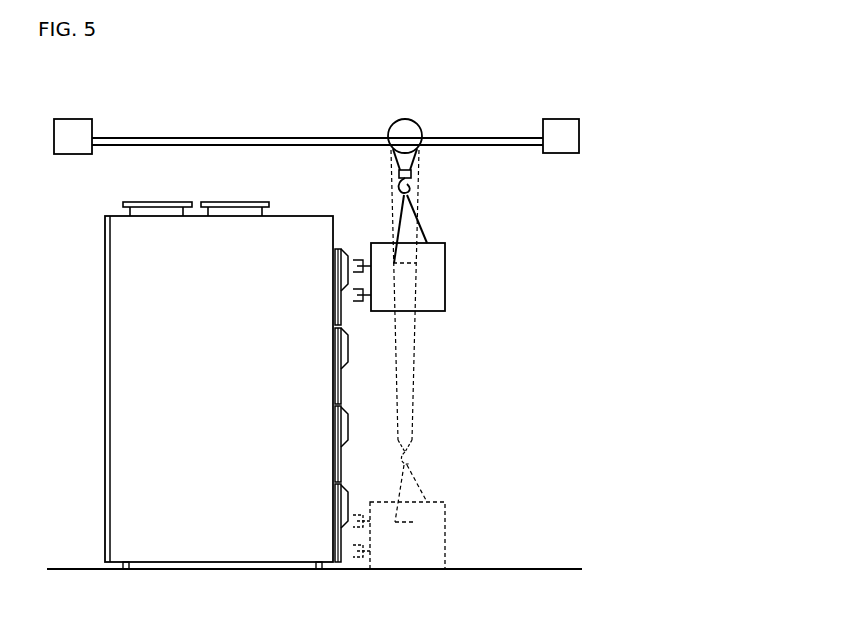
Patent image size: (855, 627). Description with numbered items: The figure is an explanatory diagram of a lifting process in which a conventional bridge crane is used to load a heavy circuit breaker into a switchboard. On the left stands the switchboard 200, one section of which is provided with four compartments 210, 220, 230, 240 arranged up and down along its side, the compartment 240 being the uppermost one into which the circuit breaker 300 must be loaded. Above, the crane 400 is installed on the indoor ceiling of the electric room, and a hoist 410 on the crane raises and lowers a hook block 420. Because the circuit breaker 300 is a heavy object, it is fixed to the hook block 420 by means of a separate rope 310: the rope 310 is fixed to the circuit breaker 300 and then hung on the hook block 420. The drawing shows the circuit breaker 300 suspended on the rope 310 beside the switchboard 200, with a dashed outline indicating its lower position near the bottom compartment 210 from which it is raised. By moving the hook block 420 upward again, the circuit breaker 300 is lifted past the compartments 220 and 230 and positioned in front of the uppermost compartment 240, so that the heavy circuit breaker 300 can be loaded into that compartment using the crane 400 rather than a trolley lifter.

The switchboard 200 is at (231, 547).
The compartment 210 is at (352, 492).
The compartment 220 is at (348, 425).
The compartment 230 is at (348, 355).
The uppermost compartment 240 is at (347, 248).
The circuit breaker 300 is at (447, 274).
The rope 310 is at (425, 229).
The crane 400 is at (238, 138).
The hoist 410 is at (405, 126).
The hook block 420 is at (415, 186).